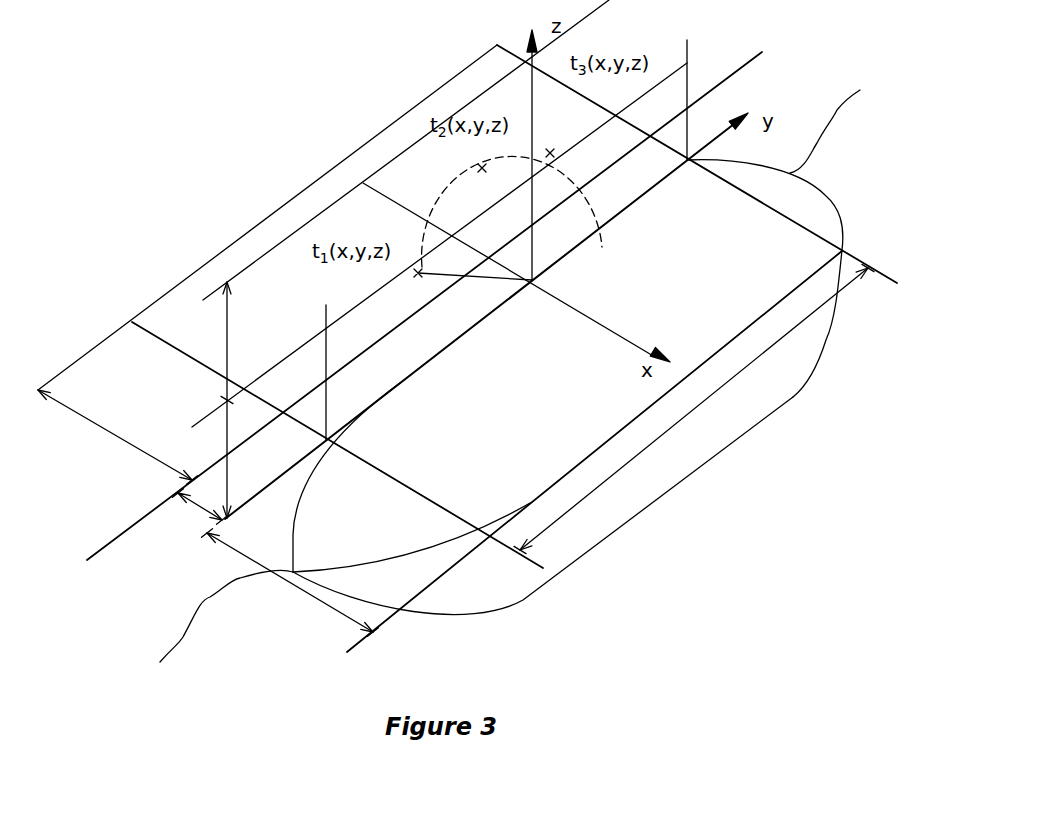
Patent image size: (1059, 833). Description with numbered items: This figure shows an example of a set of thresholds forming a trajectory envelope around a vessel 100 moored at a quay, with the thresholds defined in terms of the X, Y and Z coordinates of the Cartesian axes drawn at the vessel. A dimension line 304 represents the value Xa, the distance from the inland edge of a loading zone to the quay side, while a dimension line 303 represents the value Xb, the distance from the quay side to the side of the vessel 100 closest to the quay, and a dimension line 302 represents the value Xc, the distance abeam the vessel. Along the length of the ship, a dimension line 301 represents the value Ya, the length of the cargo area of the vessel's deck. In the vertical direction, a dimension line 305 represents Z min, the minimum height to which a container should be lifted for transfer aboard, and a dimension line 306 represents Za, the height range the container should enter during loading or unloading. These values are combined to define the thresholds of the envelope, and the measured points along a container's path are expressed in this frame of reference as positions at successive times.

The vessel 100 is at (810, 395).
The dimension line 301 is at (665, 450).
The dimension line 302 is at (326, 624).
The dimension line 303 is at (208, 532).
The dimension line 304 is at (138, 461).
The dimension line 305 is at (215, 450).
The dimension line 306 is at (215, 320).